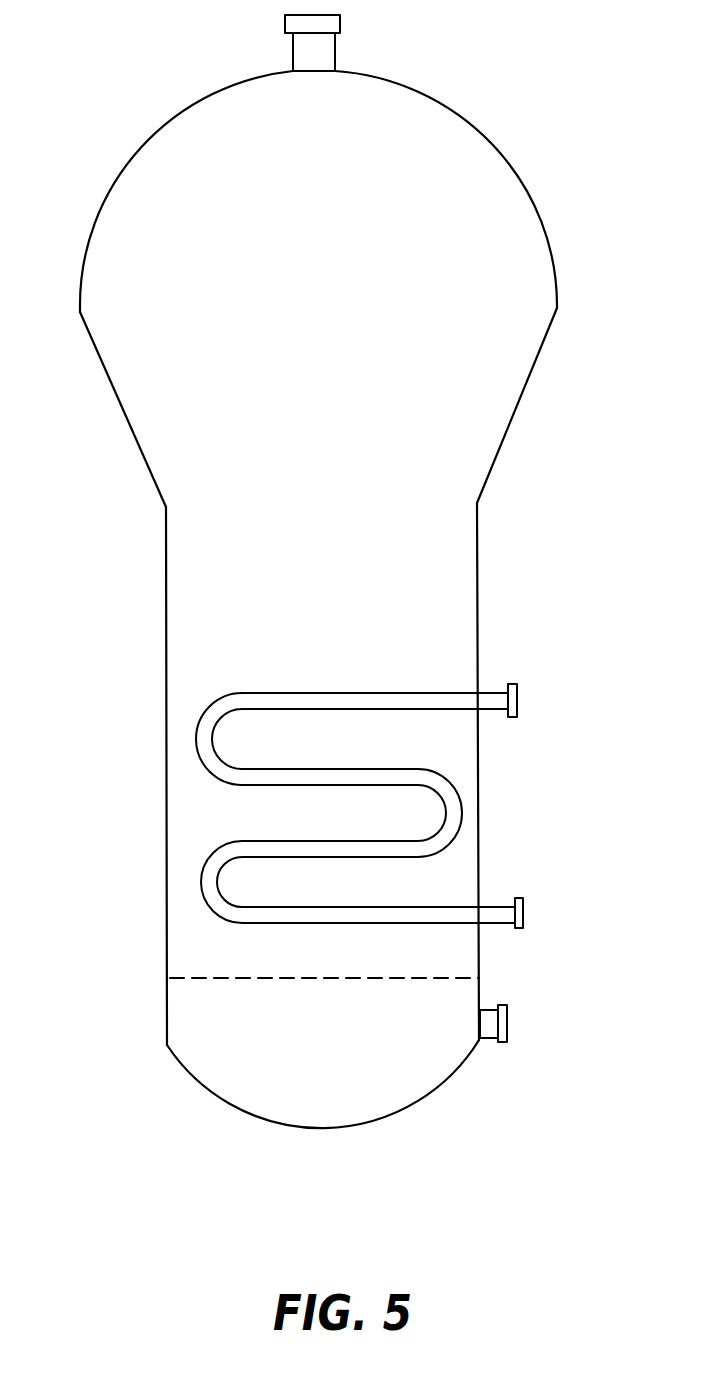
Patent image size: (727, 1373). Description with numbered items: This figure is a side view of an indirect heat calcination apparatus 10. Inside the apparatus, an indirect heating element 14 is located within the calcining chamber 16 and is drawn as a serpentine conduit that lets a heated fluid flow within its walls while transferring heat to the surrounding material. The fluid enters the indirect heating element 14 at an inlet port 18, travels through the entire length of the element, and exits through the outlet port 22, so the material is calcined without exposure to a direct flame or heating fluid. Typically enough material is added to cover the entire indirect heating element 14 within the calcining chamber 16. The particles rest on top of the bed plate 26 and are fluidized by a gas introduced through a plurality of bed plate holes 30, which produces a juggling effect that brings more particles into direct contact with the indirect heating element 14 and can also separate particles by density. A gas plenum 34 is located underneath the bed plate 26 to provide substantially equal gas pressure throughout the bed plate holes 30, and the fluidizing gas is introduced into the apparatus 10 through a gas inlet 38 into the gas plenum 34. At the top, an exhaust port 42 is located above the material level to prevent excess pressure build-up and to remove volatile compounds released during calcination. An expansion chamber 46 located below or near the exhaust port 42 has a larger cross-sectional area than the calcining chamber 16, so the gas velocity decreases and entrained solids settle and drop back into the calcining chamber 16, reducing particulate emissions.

The indirect heat calcination apparatus 10 is at (356, 619).
The indirect heating element 14 is at (412, 692).
The calcining chamber 16 is at (242, 627).
The inlet port 18 is at (517, 703).
The outlet port 22 is at (523, 920).
The bed plate 26 is at (197, 980).
The bed plate holes 30 is at (260, 980).
The gas plenum 34 is at (388, 1097).
The gas inlet 38 is at (507, 1025).
The exhaust port 42 is at (335, 53).
The expansion chamber 46 is at (497, 352).